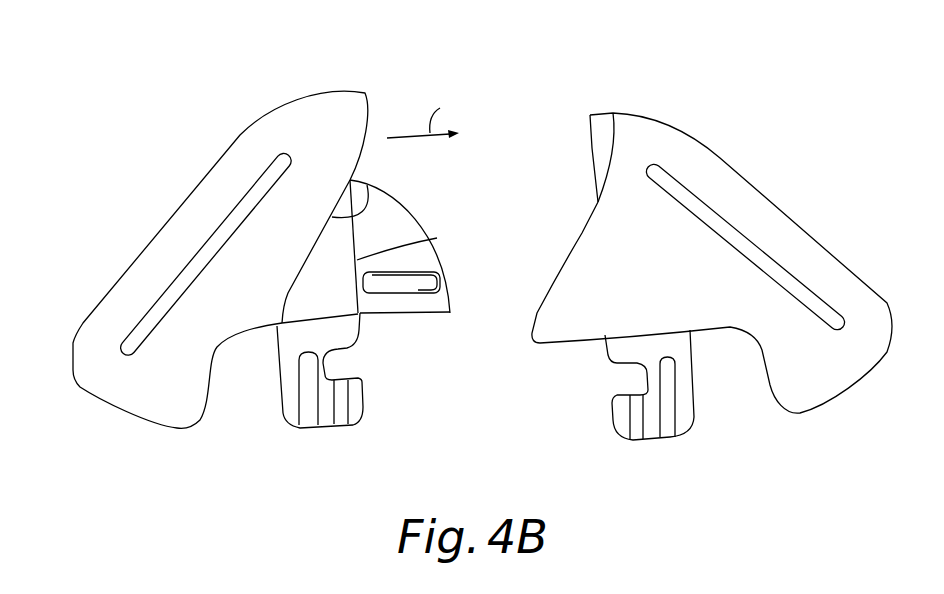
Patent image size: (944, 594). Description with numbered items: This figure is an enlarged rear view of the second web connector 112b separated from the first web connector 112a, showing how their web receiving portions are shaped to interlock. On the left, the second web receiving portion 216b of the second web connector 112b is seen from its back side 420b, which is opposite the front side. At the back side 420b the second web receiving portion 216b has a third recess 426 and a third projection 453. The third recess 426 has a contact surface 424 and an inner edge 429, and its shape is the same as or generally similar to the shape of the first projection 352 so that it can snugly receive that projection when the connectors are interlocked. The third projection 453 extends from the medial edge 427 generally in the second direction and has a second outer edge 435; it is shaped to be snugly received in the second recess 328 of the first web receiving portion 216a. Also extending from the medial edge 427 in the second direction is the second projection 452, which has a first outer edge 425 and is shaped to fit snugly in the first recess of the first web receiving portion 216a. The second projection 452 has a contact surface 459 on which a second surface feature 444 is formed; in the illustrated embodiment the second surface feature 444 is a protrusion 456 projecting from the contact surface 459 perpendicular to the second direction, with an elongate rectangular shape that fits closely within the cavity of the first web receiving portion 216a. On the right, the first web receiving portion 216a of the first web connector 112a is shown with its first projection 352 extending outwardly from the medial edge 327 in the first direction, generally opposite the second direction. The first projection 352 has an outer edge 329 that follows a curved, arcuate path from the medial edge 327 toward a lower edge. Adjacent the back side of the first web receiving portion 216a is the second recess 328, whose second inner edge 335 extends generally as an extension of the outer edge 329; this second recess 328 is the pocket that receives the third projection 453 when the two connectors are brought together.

The first web connector 112a is at (783, 162).
The second web connector 112b is at (140, 200).
The first web receiving portion 216a is at (678, 143).
The second web receiving portion 216b is at (162, 405).
The back side 420b is at (288, 130).
The contact surface 424 is at (340, 301).
The first outer edge 425 is at (410, 203).
The third recess 426 is at (322, 267).
The medial edge 427 is at (440, 232).
The inner edge 429 is at (367, 180).
The second outer edge 435 is at (370, 125).
The second surface feature 444 is at (384, 312).
The second projection 452 is at (421, 307).
The third projection 453 is at (365, 93).
The protrusion 456 is at (415, 270).
The contact surface 459 is at (393, 235).
The medial edge 327 is at (588, 130).
The second recess 328 is at (600, 123).
The outer edge 329 is at (553, 288).
The second inner edge 335 is at (617, 135).
The first projection 352 is at (587, 253).